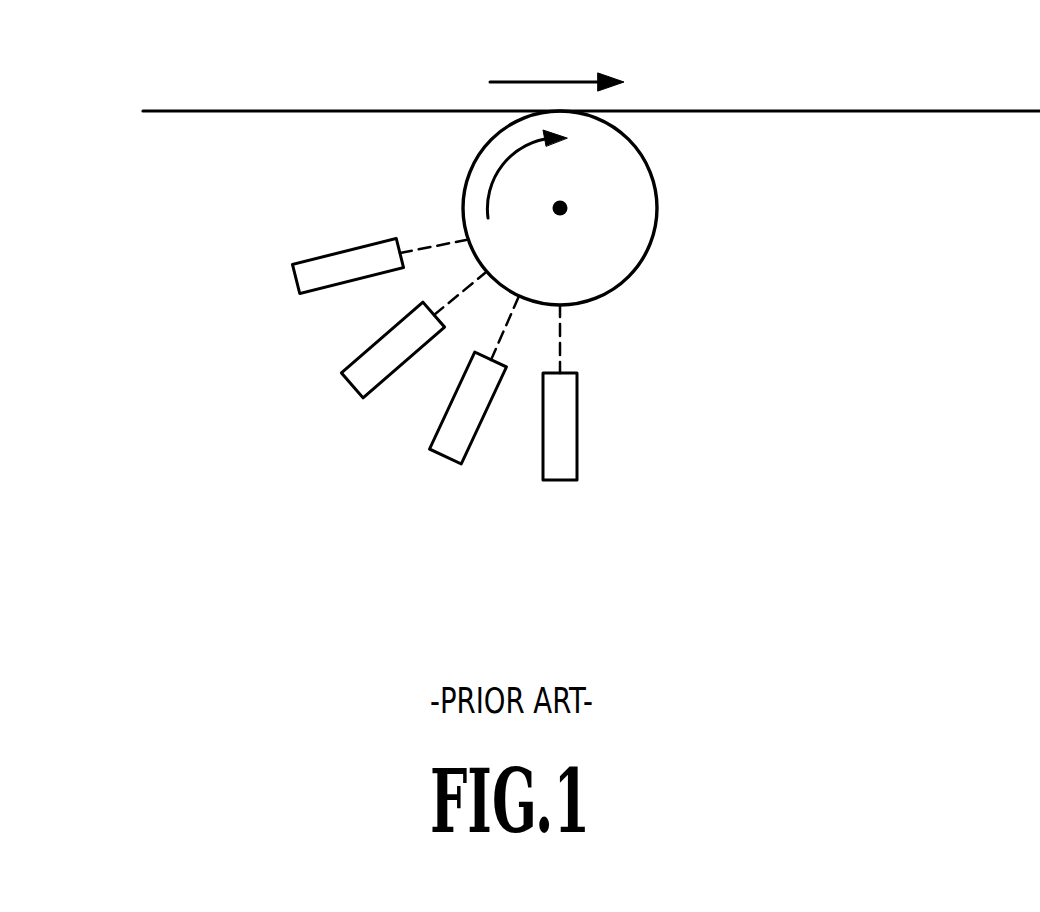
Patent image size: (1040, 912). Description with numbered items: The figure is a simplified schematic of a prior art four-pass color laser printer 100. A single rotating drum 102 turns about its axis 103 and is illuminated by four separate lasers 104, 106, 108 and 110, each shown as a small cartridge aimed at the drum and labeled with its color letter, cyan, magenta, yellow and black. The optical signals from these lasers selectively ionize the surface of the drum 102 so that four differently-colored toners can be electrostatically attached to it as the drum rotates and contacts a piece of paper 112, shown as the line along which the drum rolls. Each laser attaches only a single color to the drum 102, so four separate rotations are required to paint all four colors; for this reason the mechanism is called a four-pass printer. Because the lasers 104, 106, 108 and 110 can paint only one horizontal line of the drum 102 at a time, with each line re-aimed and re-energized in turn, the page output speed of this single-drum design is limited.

The color laser printer 100 is at (918, 407).
The rotating drum 102 is at (658, 212).
The axis 103 is at (566, 212).
The laser 104 is at (301, 290).
The laser 106 is at (355, 401).
The laser 108 is at (450, 460).
The laser 110 is at (561, 481).
The piece of paper 112 is at (870, 111).